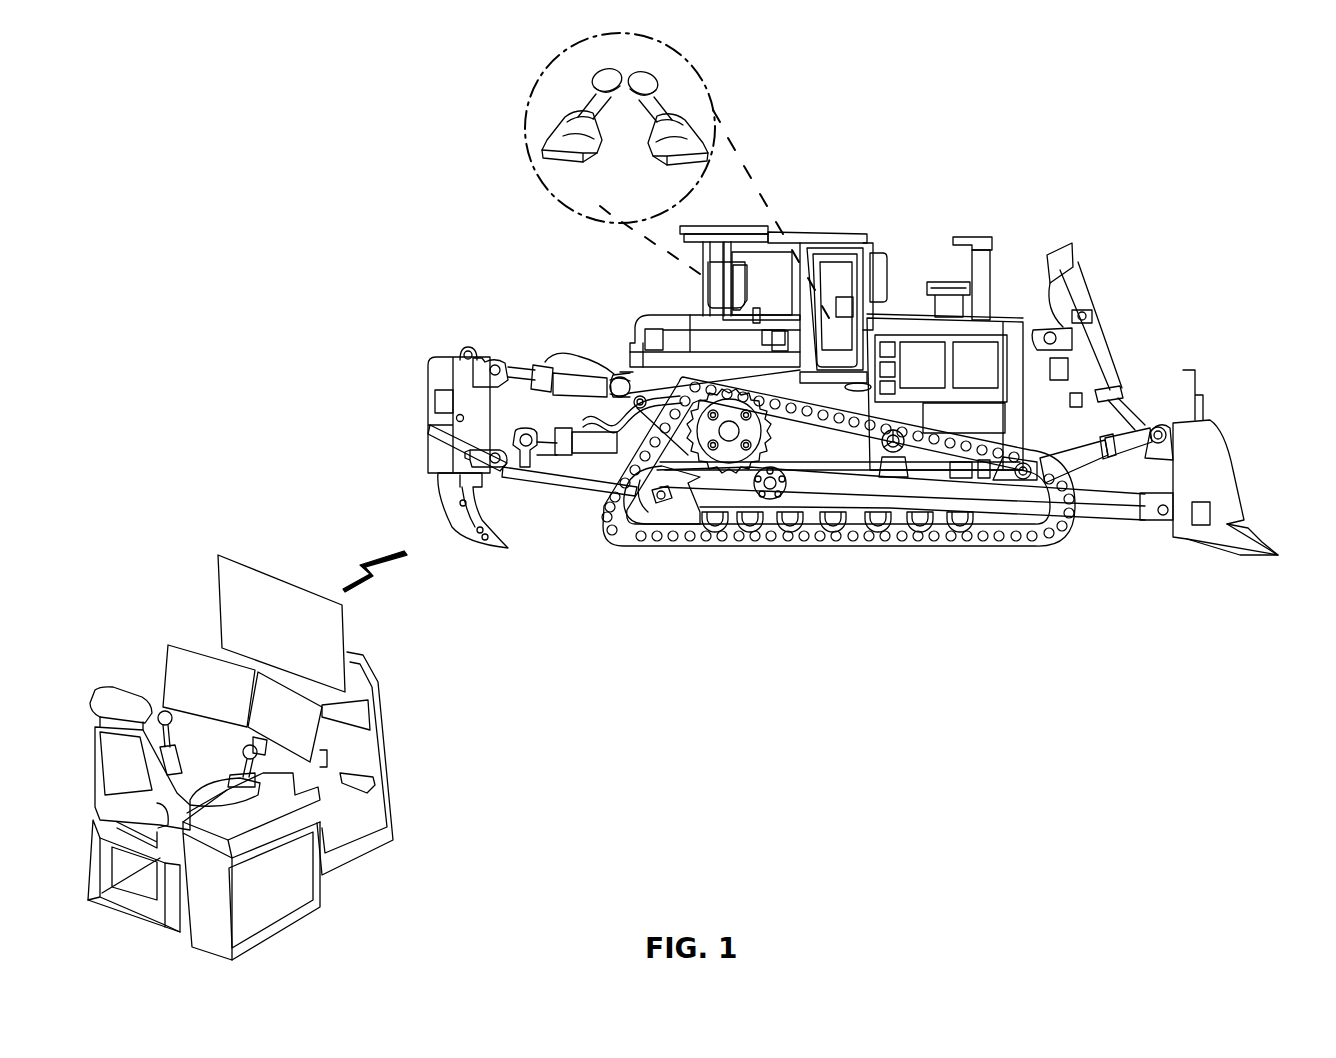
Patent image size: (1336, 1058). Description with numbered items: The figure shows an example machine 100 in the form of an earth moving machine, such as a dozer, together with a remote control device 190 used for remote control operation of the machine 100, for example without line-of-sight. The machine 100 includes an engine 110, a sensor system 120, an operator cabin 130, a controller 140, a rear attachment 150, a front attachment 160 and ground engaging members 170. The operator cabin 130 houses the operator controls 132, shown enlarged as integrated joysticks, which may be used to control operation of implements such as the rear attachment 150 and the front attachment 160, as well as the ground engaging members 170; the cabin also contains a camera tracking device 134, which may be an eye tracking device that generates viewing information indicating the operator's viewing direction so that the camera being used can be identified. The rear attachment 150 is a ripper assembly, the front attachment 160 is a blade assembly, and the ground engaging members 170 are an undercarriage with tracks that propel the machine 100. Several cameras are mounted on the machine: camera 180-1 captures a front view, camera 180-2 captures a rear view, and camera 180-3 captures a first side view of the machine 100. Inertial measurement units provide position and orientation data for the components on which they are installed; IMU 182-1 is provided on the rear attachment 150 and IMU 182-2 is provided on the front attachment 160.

The machine 100 is at (214, 70).
The engine 110 is at (973, 357).
The sensor system 120 is at (891, 331).
The operator cabin 130 is at (833, 230).
The operator controls 132 is at (690, 68).
The camera tracking device 134 is at (773, 330).
The controller 140 is at (720, 342).
The rear attachment 150 is at (445, 490).
The front attachment 160 is at (1212, 470).
The ground engaging members 170 is at (1008, 557).
The camera 180-1 is at (1067, 373).
The camera 180-2 is at (645, 338).
The camera 180-3 is at (845, 298).
The inertial measurement unit 182-1 is at (435, 402).
The inertial measurement unit 182-2 is at (1197, 525).
The remote control device 190 is at (418, 754).